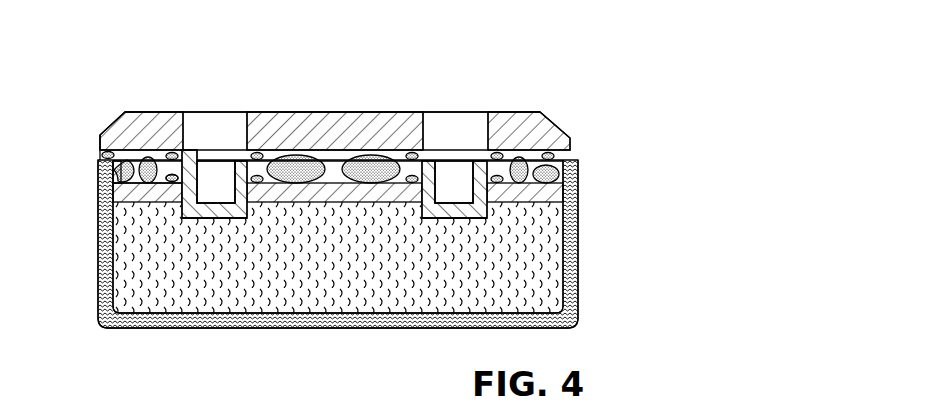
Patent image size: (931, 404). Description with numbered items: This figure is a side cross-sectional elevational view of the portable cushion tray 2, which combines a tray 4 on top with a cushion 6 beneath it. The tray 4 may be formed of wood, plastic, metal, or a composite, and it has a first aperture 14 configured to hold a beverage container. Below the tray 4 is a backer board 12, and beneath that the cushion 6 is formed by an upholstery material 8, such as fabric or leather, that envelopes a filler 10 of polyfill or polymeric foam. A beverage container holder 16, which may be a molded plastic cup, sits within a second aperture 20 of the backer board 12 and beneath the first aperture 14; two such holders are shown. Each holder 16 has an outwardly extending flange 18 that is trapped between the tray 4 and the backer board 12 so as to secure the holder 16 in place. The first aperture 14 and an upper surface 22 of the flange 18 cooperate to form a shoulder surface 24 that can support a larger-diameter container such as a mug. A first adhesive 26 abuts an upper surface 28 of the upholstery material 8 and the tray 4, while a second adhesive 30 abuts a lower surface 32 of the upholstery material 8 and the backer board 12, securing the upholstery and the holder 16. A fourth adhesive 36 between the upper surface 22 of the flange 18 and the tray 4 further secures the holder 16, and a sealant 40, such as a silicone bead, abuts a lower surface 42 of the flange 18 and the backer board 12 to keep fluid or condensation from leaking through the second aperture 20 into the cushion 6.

The portable cushion tray 2 is at (565, 67).
The tray 4 is at (543, 113).
The cushion 6 is at (586, 268).
The upholstery material 8 is at (577, 300).
The filler 10 is at (357, 294).
The backer board 12 is at (553, 190).
The first aperture 14 is at (234, 108).
The beverage container holder 16 is at (218, 220).
The flange 18 is at (284, 166).
The second aperture 20 is at (176, 224).
The upper surface 22 is at (160, 148).
The shoulder surface 24 is at (198, 148).
The first adhesive 26 is at (100, 148).
The upper surface 28 is at (101, 151).
The second adhesive 30 is at (130, 168).
The lower surface 32 is at (115, 187).
The fourth adhesive 36 is at (170, 150).
The sealant 40 is at (235, 193).
The lower surface 42 is at (161, 184).